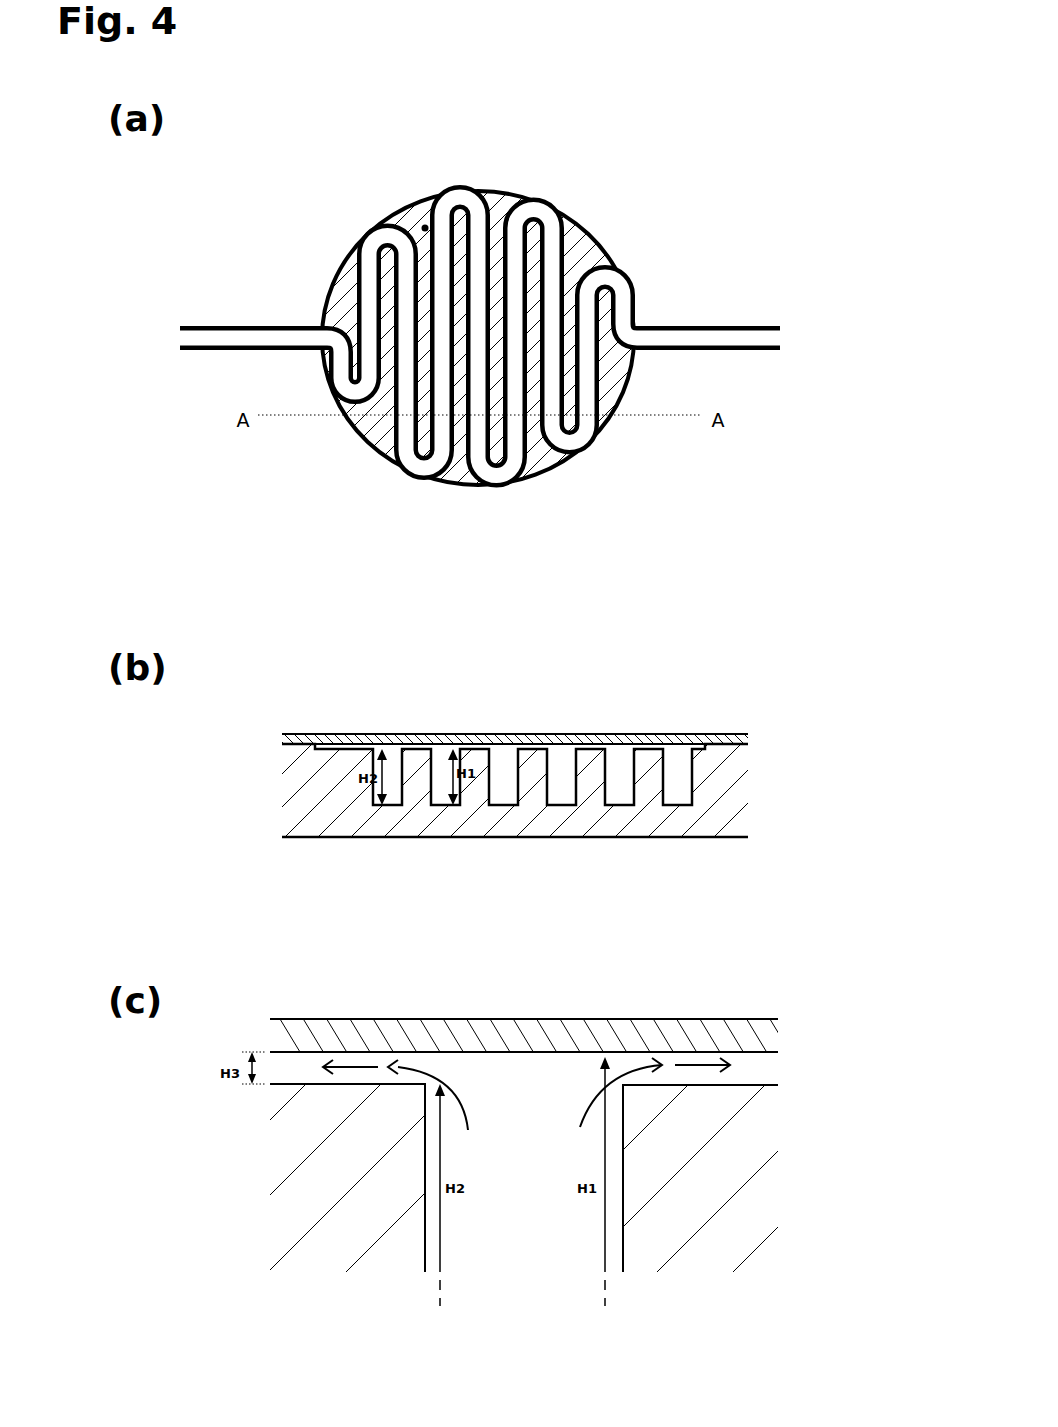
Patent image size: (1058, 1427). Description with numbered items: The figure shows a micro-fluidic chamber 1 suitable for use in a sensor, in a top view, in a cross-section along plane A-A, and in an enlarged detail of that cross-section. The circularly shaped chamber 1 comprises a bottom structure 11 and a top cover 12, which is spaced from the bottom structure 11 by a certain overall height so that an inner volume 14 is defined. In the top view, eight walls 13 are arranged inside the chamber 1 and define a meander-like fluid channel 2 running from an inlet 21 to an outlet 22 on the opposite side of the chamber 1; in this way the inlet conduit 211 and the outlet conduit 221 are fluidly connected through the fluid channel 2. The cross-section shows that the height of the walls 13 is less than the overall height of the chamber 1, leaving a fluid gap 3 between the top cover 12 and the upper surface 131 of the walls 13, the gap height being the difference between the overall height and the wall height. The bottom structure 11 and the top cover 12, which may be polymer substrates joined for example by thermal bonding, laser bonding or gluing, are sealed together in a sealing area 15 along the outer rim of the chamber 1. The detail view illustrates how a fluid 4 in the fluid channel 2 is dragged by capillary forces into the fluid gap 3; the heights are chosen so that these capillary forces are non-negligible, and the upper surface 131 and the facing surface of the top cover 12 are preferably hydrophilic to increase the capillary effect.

The micro-fluidic chamber 1 is at (620, 196).
The fluid channel 2 is at (462, 202).
The fluid gap 3 is at (415, 200).
The fluid 4 is at (526, 1094).
The bottom structure 11 is at (433, 820).
The top cover 12 is at (420, 735).
The walls 13 is at (500, 455).
The inner volume 14 is at (407, 443).
The sealing area 15 is at (293, 735).
The inlet 21 is at (320, 327).
The outlet 22 is at (640, 325).
The upper surface of the walls 131 is at (478, 747).
The inlet conduit 211 is at (227, 336).
The outlet conduit 221 is at (693, 336).